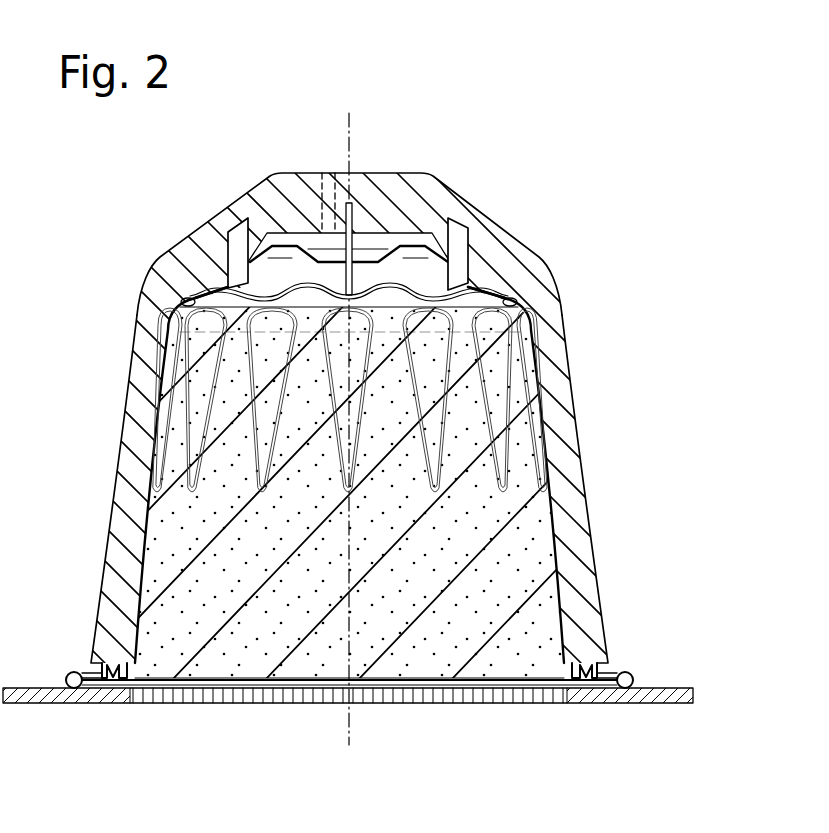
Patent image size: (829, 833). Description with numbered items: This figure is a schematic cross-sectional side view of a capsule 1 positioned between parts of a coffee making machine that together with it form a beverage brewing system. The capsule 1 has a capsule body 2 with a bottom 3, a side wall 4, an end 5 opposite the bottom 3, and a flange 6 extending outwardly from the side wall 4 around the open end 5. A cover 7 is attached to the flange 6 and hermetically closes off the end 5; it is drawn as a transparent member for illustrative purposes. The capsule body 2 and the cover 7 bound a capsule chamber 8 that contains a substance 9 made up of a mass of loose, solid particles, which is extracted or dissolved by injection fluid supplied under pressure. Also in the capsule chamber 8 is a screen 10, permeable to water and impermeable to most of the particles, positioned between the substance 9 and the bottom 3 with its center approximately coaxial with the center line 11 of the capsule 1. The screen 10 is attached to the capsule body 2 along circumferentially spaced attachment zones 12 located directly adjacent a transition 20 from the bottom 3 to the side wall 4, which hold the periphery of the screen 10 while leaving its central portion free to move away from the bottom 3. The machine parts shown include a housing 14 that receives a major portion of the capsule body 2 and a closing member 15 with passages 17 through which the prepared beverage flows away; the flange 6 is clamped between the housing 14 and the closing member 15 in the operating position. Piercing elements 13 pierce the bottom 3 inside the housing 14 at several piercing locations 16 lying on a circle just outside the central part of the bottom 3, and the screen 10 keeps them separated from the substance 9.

The capsule 1 is at (483, 262).
The capsule body 2 is at (556, 530).
The bottom 3 is at (409, 237).
The side wall 4 is at (548, 453).
The end 5 is at (533, 677).
The flange 6 is at (631, 674).
The cover 7 is at (505, 676).
The capsule chamber 8 is at (178, 547).
The substance 9 is at (350, 292).
The screen 10 is at (291, 276).
The center line 11 is at (347, 124).
The attachment zones 12 is at (186, 298).
The piercing elements 13 is at (239, 217).
The housing 14 is at (558, 362).
The closing member 15 is at (613, 703).
The piercing locations 16 is at (229, 282).
The passages 17 is at (253, 697).
The transition 20 is at (190, 291).